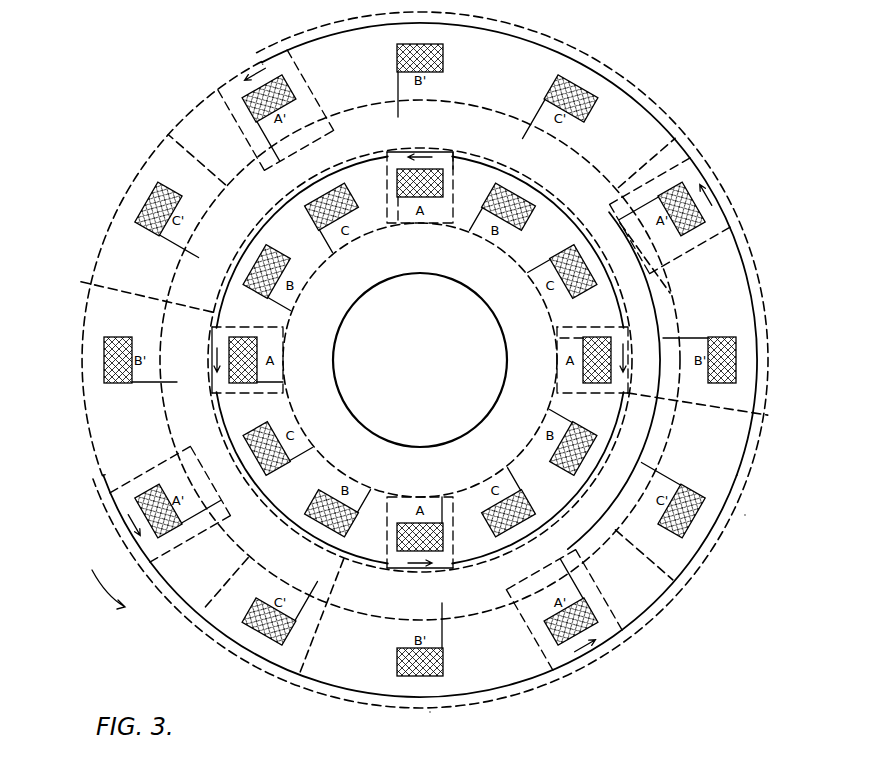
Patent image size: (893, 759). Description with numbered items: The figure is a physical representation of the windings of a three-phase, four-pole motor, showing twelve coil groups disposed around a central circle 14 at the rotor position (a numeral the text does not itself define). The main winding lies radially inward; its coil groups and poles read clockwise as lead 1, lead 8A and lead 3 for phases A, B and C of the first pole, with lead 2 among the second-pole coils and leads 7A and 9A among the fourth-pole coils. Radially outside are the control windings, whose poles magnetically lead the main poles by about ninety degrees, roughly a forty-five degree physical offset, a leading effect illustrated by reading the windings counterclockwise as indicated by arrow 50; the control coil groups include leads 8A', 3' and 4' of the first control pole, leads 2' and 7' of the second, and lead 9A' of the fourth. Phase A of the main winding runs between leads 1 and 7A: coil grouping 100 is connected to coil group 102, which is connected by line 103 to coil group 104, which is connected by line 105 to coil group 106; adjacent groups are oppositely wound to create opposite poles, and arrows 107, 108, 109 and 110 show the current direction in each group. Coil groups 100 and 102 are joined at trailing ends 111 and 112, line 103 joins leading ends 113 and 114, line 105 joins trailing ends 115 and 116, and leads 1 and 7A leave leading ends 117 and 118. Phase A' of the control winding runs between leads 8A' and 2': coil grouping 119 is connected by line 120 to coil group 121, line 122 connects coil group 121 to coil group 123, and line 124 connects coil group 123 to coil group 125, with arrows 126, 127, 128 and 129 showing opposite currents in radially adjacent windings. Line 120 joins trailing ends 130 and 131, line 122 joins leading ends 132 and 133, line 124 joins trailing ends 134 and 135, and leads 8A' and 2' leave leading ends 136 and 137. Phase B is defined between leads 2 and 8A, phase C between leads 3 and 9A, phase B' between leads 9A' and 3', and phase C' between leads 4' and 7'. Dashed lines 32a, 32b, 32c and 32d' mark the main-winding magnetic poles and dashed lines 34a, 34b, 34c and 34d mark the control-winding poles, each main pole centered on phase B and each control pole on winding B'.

The phase A main winding lead 1 is at (290, 382).
The phase B main winding lead 2 is at (525, 242).
The phase C main winding lead 3 is at (338, 230).
The phase A' control winding lead 2' is at (254, 125).
The phase B' control winding lead 3' is at (145, 378).
The phase C' control winding lead 4' is at (178, 234).
The phase C' control winding lead 7' is at (547, 118).
The phase A main winding lead 7A is at (320, 477).
The phase B main winding lead 8A is at (291, 278).
The phase C main winding lead 9A is at (338, 488).
The phase A' control winding lead 8A' is at (266, 574).
The phase B' control winding lead 9A' is at (416, 637).
The rotor bore 14 is at (478, 420).
The arrow 50 is at (91, 592).
The coil grouping 100 is at (266, 360).
The coil group 102 is at (443, 186).
The line 103 is at (472, 262).
The coil group 104 is at (580, 368).
The line 105 is at (580, 487).
The coil group 106 is at (420, 527).
The arrow 107 is at (208, 357).
The arrow 108 is at (410, 152).
The arrow 109 is at (628, 330).
The arrow 110 is at (427, 566).
The trailing end 111 is at (260, 333).
The trailing end 112 is at (448, 158).
The leading end 113 is at (386, 205).
The leading end 114 is at (590, 337).
The trailing end 115 is at (602, 395).
The trailing end 116 is at (396, 534).
The leading end 117 is at (434, 516).
The leading end 118 is at (257, 393).
The coil grouping 119 is at (130, 500).
The line 120 is at (330, 692).
The coil group 121 is at (630, 621).
The line 122 is at (665, 435).
The coil group 123 is at (705, 229).
The line 124 is at (652, 104).
The coil group 125 is at (250, 92).
The arrow 126 is at (135, 515).
The arrow 127 is at (605, 655).
The arrow 128 is at (702, 200).
The arrow 129 is at (250, 68).
The trailing end 130 is at (150, 480).
The trailing end 131 is at (550, 630).
The leading end 132 is at (612, 608).
The leading end 133 is at (668, 193).
The trailing end 134 is at (688, 239).
The trailing end 135 is at (288, 90).
The leading end 136 is at (245, 103).
The leading end 137 is at (178, 546).
The dashed line 32a is at (130, 290).
The dashed line 32b is at (680, 129).
The dashed line 32c is at (750, 418).
The dashed line 32d' is at (288, 634).
The dashed line 34a is at (95, 440).
The dashed line 34b is at (560, 33).
The dashed line 34c is at (745, 515).
The dashed line 34d is at (430, 712).